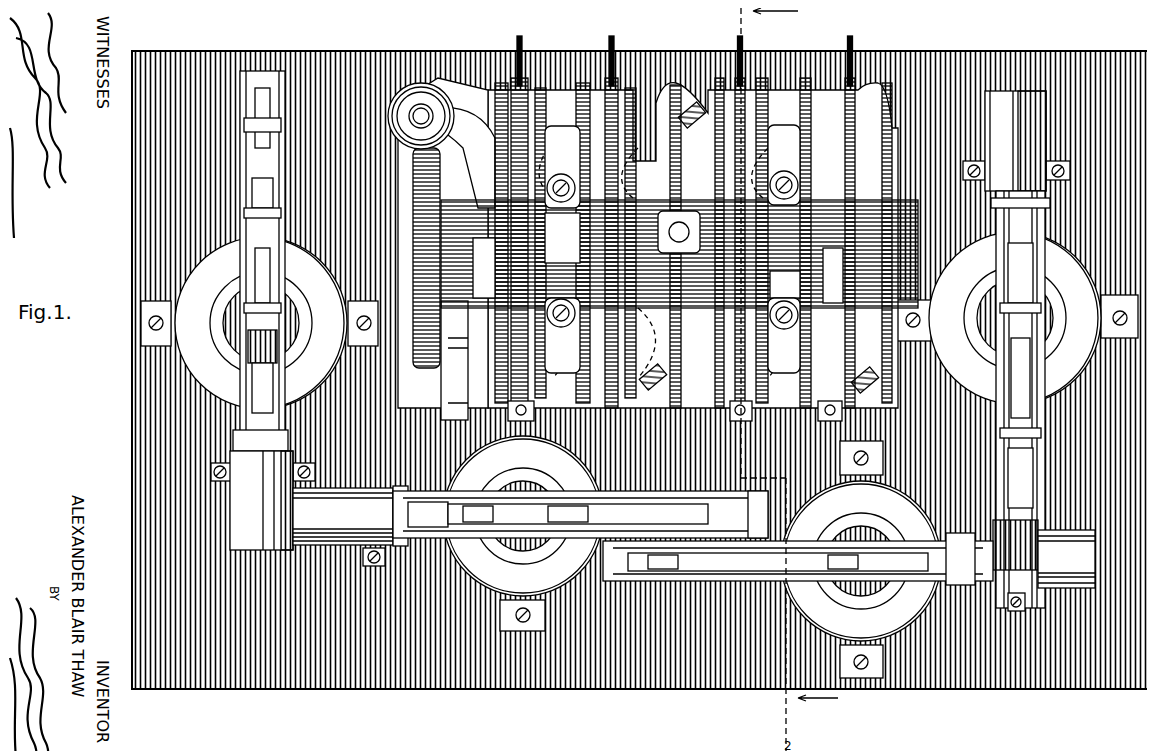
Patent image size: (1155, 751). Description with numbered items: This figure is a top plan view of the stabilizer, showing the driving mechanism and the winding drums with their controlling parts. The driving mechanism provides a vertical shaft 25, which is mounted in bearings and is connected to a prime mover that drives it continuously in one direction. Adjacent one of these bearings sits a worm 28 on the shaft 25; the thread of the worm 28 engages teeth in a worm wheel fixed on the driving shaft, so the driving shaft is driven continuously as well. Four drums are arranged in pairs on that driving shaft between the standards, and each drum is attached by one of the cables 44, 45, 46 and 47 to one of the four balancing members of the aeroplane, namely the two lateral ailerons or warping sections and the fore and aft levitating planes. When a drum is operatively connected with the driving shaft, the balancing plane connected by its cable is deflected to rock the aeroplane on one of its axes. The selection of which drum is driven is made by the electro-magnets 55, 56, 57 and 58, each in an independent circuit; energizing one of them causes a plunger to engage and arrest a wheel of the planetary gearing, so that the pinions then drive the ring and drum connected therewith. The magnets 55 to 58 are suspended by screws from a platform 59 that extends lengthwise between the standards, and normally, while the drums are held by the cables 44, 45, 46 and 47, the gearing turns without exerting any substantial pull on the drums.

The vertical shaft 25 is at (413, 100).
The worm 28 is at (440, 98).
The cable 44 is at (843, 33).
The cable 45 is at (734, 33).
The cable 46 is at (513, 33).
The cable 47 is at (605, 33).
The electro-magnet 55 is at (784, 165).
The electro-magnet 56 is at (765, 359).
The electro-magnet 57 is at (562, 167).
The electro-magnet 58 is at (562, 335).
The platform 59 is at (672, 258).